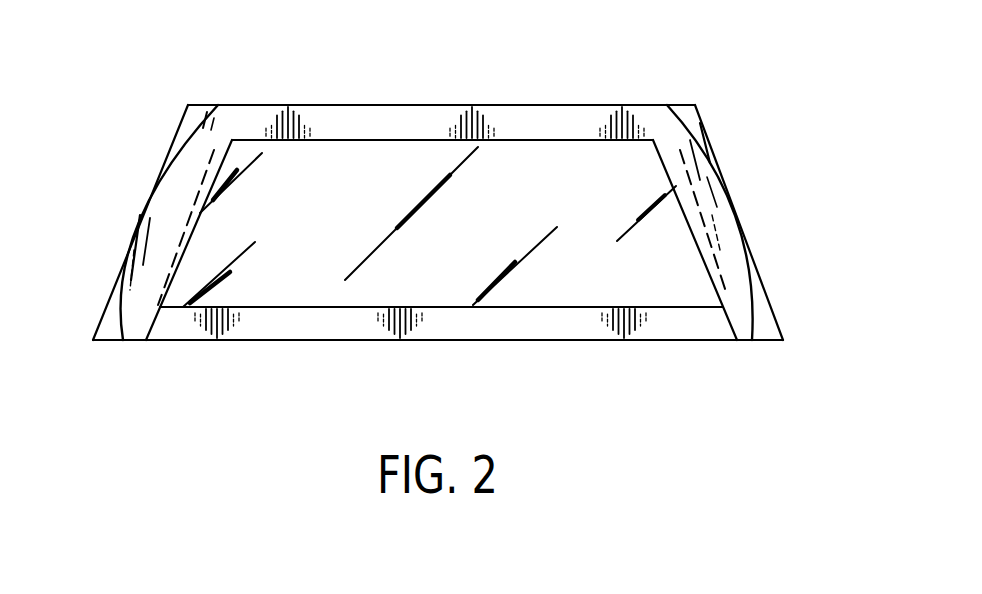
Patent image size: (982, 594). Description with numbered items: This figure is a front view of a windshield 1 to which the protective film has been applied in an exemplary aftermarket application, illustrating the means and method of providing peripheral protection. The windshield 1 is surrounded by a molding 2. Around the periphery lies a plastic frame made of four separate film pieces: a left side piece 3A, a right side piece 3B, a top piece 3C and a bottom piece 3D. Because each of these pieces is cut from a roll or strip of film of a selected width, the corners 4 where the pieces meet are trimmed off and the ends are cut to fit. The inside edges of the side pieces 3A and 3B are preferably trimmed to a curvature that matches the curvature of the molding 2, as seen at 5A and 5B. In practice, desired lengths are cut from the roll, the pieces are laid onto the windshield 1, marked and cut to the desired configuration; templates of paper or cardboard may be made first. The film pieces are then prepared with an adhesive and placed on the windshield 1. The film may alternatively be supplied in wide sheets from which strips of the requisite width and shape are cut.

The windshield 1 is at (392, 218).
The molding 2 is at (443, 209).
The left side frame piece 3A is at (213, 127).
The right side frame piece 3B is at (720, 200).
The top frame piece 3C is at (537, 117).
The bottom frame piece 3D is at (683, 323).
The corners 4 is at (184, 116).
The trimmed curvature of left piece 5A is at (190, 202).
The trimmed curvature of right piece 5B is at (717, 260).